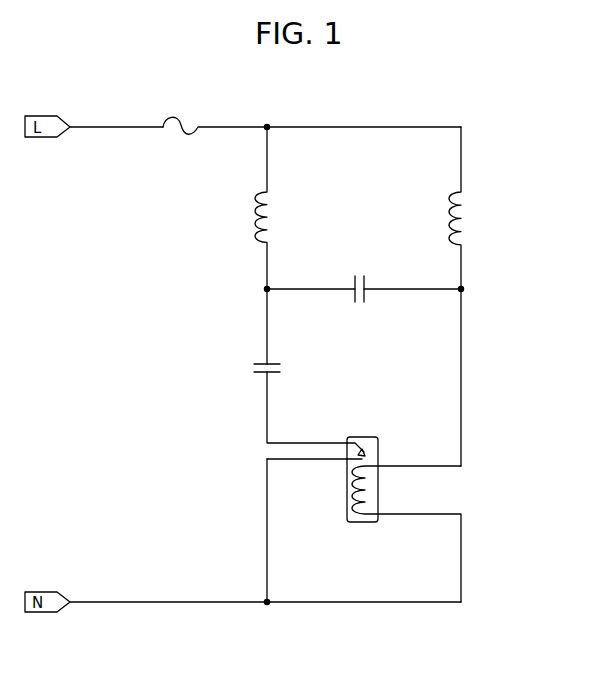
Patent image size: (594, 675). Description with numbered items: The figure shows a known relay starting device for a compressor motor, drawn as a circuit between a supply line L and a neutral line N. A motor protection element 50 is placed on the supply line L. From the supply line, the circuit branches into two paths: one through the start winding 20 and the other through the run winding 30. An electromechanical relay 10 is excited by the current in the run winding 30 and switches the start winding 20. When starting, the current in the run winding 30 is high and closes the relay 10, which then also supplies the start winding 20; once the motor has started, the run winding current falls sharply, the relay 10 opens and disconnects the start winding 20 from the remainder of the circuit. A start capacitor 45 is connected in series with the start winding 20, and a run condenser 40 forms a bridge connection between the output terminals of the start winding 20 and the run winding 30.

The electromechanical relay 10 is at (366, 488).
The start winding 20 is at (255, 212).
The run winding 30 is at (465, 215).
The run condenser 40 is at (365, 292).
The start capacitor 45 is at (262, 372).
The motor protection element 50 is at (180, 121).